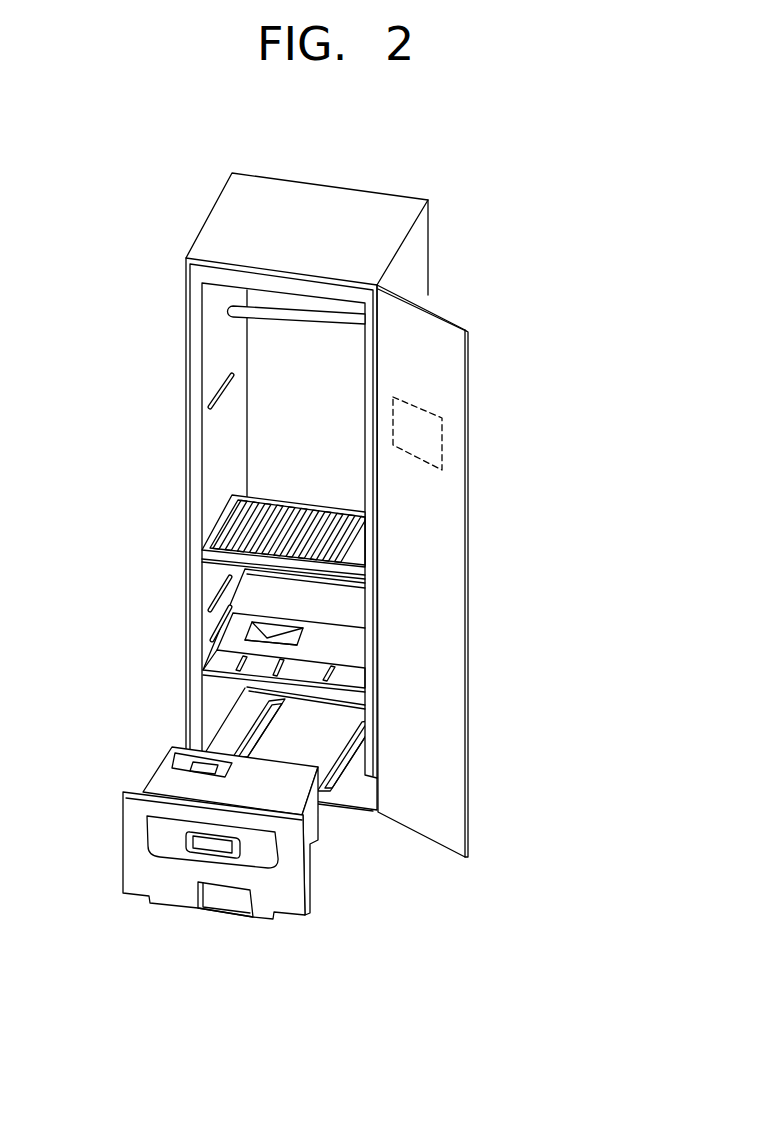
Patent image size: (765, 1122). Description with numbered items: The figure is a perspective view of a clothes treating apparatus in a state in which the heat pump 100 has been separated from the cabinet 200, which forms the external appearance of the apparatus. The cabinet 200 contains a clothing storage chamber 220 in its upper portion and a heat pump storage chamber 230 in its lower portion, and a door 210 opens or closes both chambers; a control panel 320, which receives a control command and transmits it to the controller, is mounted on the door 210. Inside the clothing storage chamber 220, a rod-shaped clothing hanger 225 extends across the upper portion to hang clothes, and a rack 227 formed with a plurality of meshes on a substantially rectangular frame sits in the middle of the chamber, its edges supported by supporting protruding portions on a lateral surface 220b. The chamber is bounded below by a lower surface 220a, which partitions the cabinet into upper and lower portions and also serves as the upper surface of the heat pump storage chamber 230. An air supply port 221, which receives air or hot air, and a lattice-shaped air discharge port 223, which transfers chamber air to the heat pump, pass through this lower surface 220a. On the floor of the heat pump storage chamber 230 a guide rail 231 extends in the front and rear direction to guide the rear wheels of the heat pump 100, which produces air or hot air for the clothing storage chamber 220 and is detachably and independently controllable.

The heat pump 100 is at (108, 790).
The cabinet 200 is at (410, 185).
The door 210 is at (457, 554).
The clothing storage chamber 220 is at (218, 358).
The lower surface of the clothing storage chamber 220a is at (248, 648).
The lateral surface of the clothing storage chamber 220b is at (228, 428).
The air supply port 221 is at (275, 636).
The air discharge port 223 is at (223, 660).
The clothing hanger 225 is at (233, 310).
The rack 227 is at (215, 519).
The heat pump storage chamber 230 is at (207, 714).
The guide rail 231 is at (275, 708).
The control panel 320 is at (437, 442).